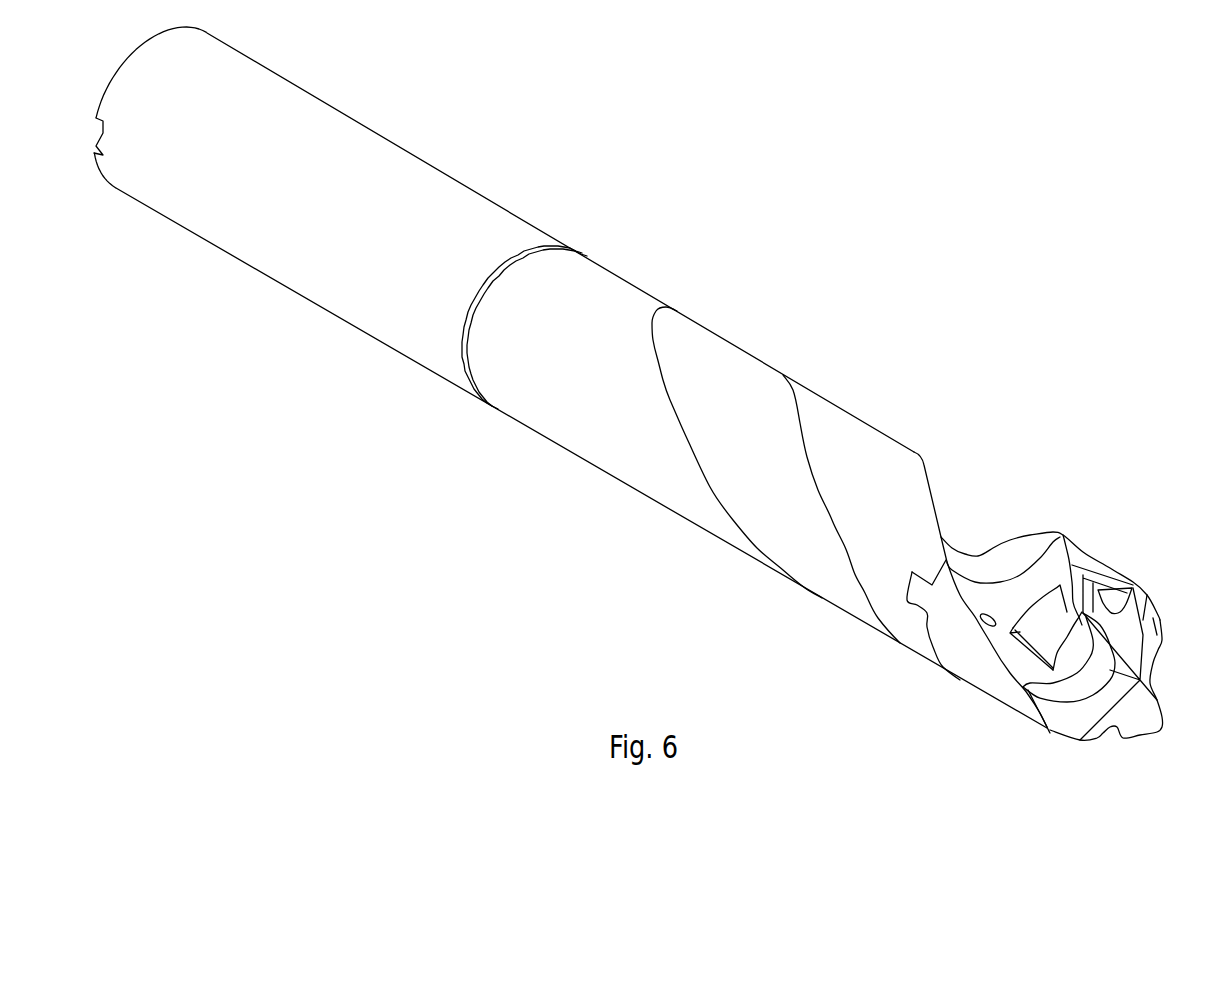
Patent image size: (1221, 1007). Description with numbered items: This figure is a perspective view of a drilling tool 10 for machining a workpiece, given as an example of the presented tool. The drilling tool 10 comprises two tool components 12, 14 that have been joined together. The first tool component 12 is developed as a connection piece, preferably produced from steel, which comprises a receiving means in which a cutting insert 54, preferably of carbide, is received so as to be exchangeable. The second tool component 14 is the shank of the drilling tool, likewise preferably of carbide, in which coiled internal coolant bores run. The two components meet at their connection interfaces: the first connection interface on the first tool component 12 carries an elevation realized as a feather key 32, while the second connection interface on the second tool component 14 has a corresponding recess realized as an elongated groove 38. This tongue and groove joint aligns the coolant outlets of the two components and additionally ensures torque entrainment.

The tool 10 is at (873, 254).
The first tool component 12 is at (1063, 562).
The second tool component 14 is at (733, 370).
The feather key 32 is at (918, 597).
The elongated groove 38 is at (908, 582).
The cutting insert 54 is at (1128, 655).